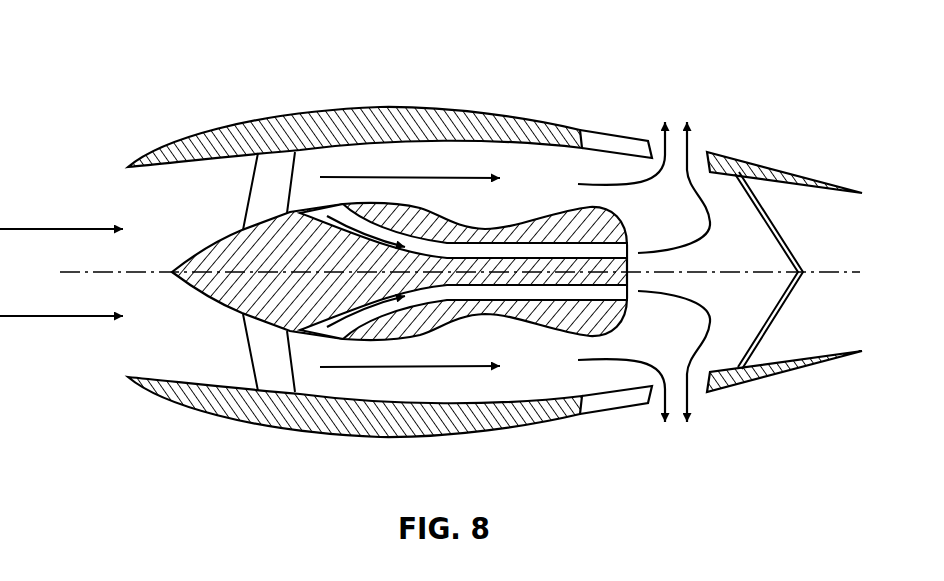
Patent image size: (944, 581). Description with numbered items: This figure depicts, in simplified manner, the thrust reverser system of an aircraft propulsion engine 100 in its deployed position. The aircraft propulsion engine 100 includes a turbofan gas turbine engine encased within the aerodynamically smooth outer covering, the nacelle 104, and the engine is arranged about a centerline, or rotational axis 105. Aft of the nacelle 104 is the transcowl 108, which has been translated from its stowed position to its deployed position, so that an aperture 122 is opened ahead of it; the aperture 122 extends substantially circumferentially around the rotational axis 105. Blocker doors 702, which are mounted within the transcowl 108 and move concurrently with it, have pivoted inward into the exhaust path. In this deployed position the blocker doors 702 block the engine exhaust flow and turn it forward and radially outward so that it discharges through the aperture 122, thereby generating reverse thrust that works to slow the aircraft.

The aircraft propulsion engine 100 is at (128, 48).
The nacelle 104 is at (378, 110).
The centerline or rotational axis 105 is at (830, 272).
The transcowl 108 is at (768, 158).
The aperture 122 is at (697, 147).
The blocker doors 702 is at (783, 230).